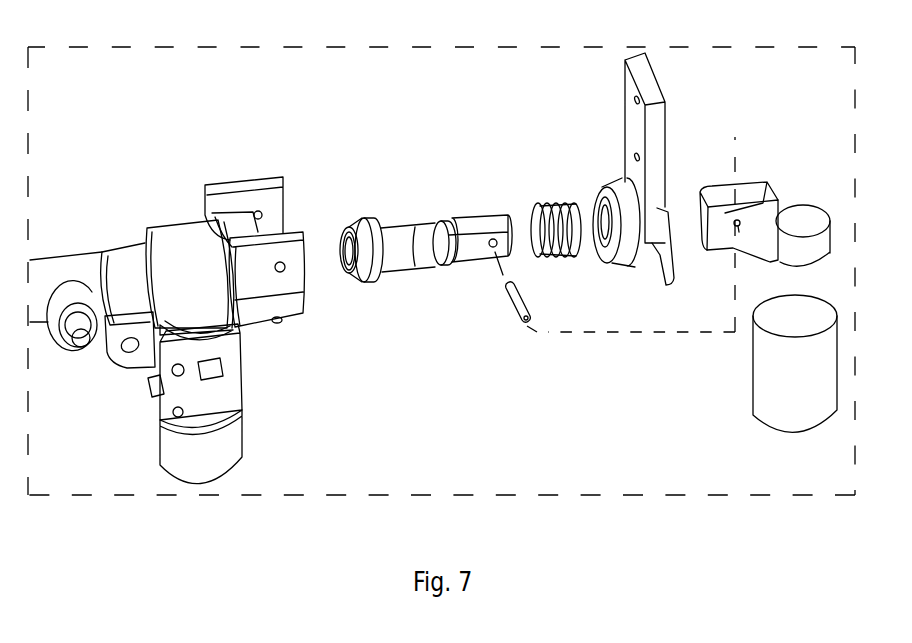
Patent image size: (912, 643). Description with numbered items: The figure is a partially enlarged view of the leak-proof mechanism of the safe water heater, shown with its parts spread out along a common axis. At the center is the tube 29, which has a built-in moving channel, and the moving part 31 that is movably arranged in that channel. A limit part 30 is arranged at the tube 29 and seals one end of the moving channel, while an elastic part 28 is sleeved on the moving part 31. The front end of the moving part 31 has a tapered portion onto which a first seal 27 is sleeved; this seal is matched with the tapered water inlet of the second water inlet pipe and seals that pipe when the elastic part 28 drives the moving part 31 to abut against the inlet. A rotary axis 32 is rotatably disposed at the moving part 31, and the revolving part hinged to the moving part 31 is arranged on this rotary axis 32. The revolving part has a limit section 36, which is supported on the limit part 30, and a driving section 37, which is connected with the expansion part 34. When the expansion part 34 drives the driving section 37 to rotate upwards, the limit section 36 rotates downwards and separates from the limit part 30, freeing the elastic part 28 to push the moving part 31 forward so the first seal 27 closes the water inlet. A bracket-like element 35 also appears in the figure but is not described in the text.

The first seal 27 is at (372, 273).
The elastic part 28 is at (552, 203).
The tube 29 is at (175, 250).
The limit part 30 is at (612, 183).
The moving part 31 is at (428, 238).
The rotary axis 32 is at (473, 393).
The expansion part 34 is at (780, 360).
The bracket bar 35 is at (648, 84).
The limit section 36 is at (725, 217).
The driving section 37 is at (795, 223).